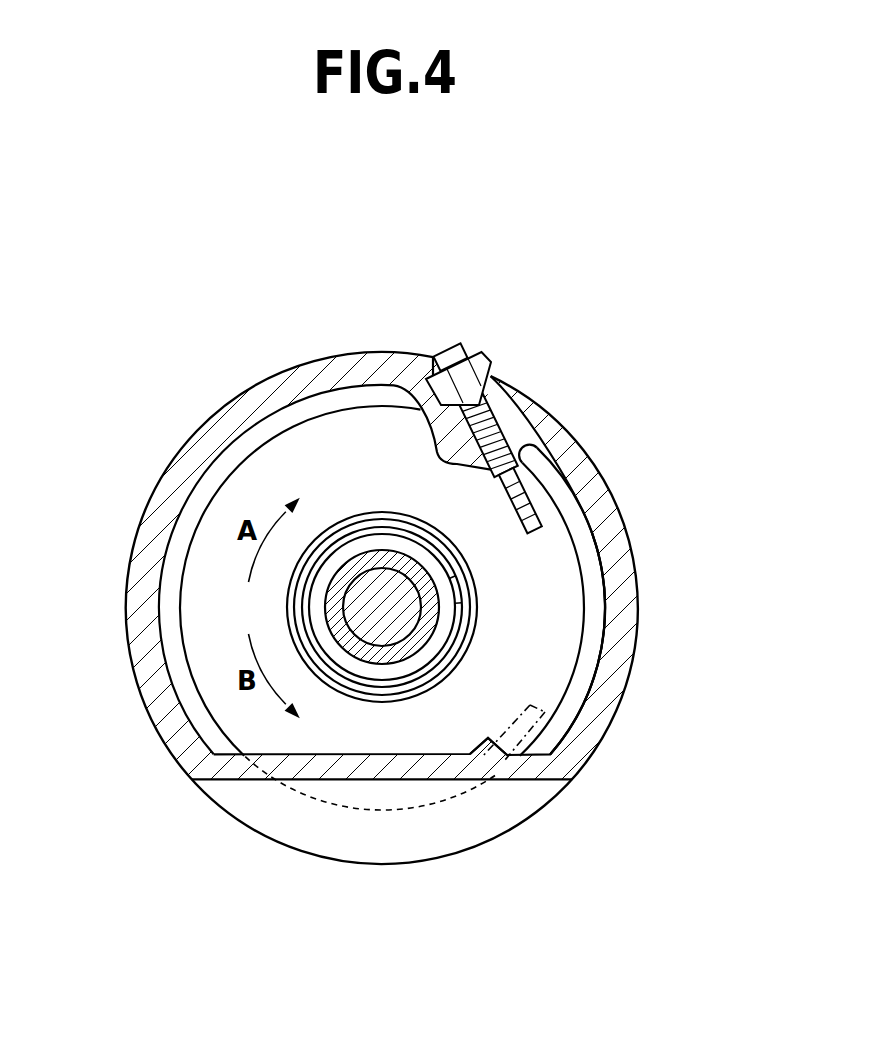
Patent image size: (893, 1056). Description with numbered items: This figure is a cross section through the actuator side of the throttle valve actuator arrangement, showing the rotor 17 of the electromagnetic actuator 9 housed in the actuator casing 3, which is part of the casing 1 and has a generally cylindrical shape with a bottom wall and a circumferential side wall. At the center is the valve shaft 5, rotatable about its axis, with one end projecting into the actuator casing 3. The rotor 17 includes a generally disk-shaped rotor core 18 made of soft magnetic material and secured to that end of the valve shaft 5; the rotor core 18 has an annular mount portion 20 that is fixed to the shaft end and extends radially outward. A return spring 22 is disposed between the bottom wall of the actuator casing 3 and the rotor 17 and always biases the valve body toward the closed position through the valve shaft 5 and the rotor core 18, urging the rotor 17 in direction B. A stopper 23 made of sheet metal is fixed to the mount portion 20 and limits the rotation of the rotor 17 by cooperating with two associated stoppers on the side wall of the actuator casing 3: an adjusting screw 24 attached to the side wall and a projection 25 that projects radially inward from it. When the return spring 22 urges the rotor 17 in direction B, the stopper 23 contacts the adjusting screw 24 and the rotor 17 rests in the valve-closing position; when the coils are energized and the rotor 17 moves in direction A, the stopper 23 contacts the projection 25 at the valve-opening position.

The casing 1 is at (127, 518).
The actuator casing 3 is at (138, 614).
The valve shaft 5 is at (362, 640).
The electromagnetic actuator 9 is at (323, 398).
The rotor 17 is at (565, 640).
The rotor core 18 is at (515, 629).
The mount portion 20 is at (555, 582).
The return spring 22 is at (408, 676).
The stopper 23 is at (540, 493).
The adjusting screw 24 is at (438, 346).
The projection 25 is at (494, 753).